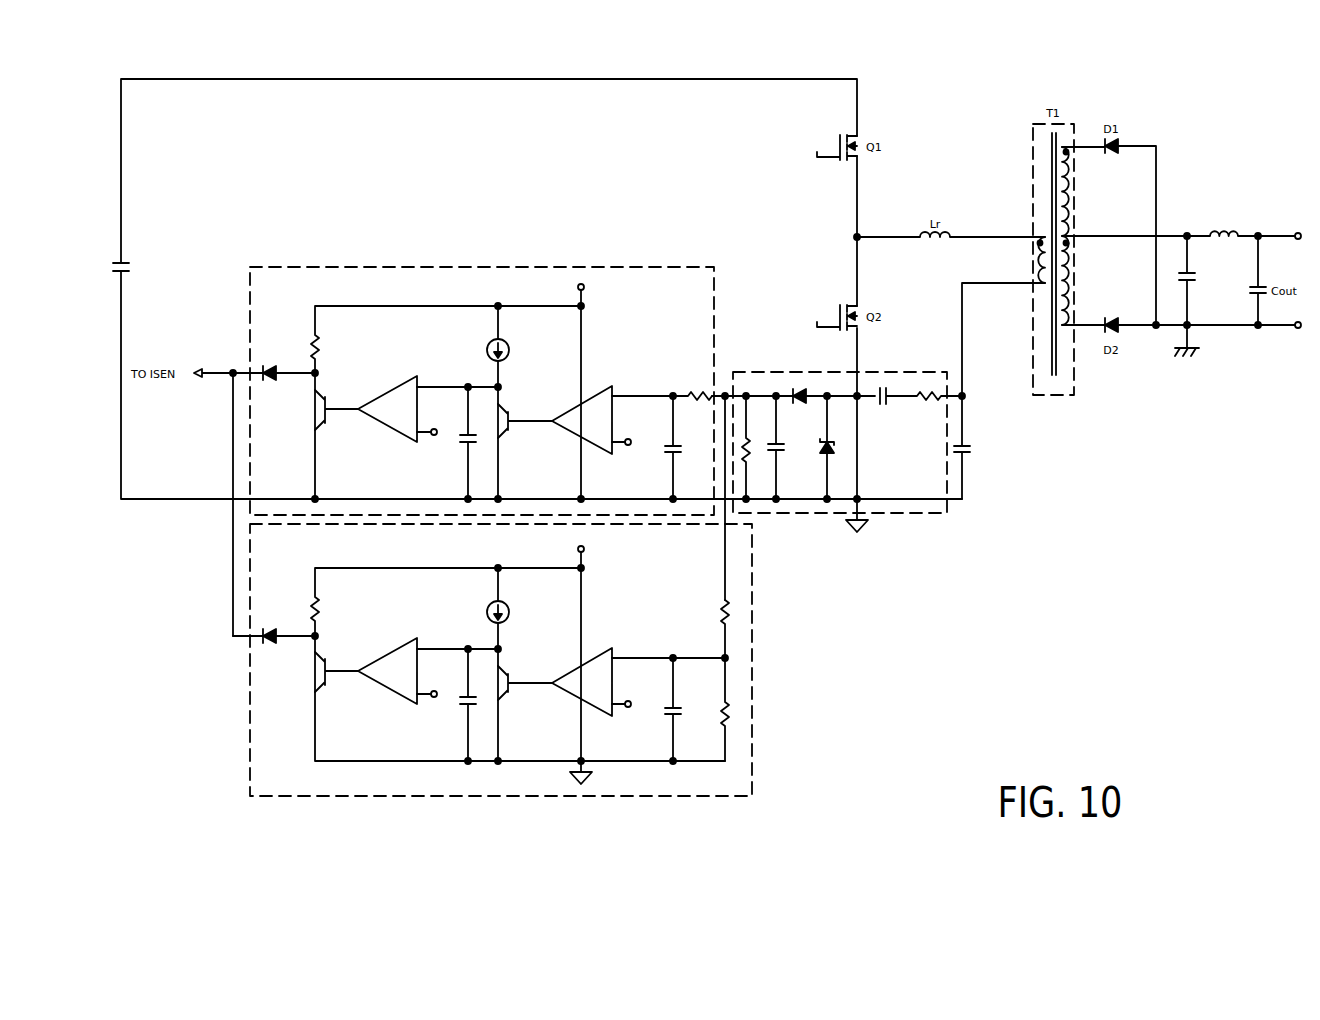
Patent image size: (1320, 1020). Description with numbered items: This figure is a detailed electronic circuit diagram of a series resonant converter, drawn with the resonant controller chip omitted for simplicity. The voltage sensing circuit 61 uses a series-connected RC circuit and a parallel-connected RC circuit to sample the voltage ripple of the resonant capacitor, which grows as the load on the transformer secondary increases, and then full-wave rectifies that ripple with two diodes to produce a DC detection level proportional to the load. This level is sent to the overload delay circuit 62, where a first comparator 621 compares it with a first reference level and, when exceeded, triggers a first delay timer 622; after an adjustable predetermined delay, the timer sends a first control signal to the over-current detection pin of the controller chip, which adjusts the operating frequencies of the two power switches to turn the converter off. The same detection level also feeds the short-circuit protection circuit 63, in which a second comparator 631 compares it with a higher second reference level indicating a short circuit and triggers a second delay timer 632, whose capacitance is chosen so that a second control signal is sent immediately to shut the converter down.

The voltage sensing circuit 61 is at (913, 514).
The overload delay circuit 62 is at (491, 364).
The short-circuit protection circuit 63 is at (536, 660).
The first comparator 621 is at (597, 404).
The first delay timer 622 is at (423, 363).
The second comparator 631 is at (597, 666).
The second delay timer 632 is at (423, 623).